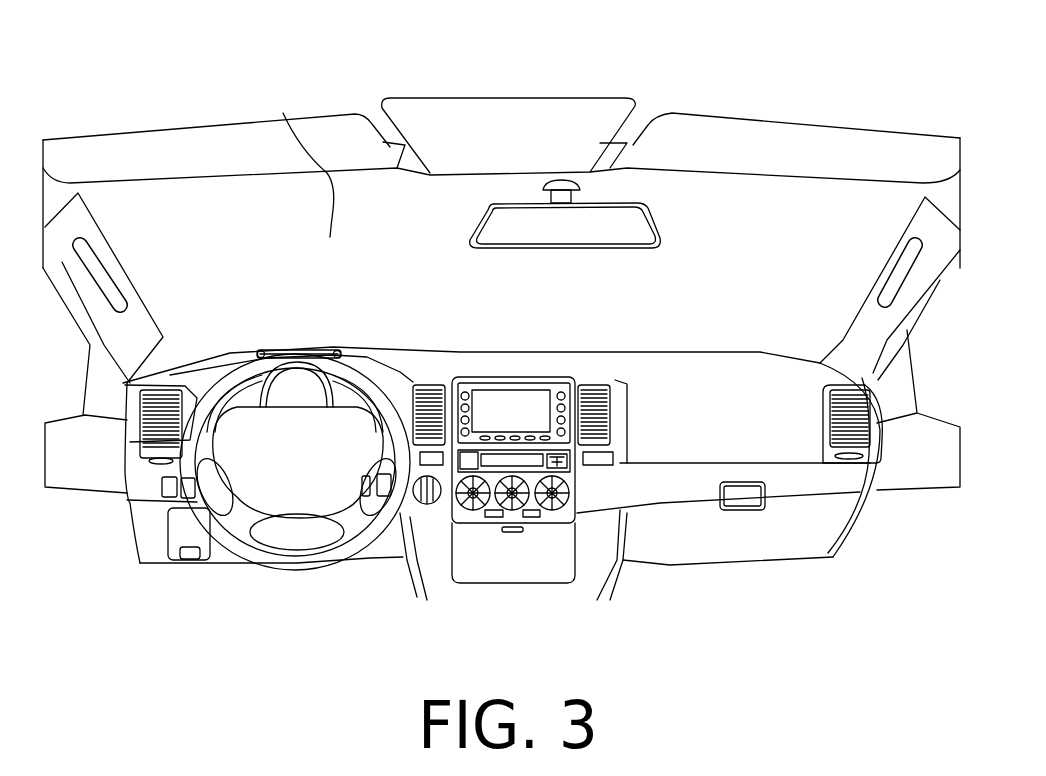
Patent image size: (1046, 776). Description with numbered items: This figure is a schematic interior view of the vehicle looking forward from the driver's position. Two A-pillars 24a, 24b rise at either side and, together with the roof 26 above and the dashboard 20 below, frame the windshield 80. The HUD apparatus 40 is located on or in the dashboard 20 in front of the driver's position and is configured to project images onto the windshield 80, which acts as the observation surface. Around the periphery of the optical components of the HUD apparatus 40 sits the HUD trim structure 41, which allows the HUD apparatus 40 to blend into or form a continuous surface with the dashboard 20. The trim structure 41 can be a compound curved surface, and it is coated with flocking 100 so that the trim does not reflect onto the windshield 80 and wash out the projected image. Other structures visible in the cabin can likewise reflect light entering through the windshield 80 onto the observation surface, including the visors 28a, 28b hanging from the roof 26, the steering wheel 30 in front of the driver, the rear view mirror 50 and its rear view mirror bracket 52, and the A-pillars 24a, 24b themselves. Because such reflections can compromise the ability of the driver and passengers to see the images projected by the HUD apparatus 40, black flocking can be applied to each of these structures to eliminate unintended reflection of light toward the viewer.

The dashboard 20 is at (735, 390).
The A-pillar 24a is at (108, 247).
The A-pillar 24b is at (897, 247).
The roof 26 is at (662, 84).
The visor 28a is at (213, 126).
The visor 28b is at (805, 124).
The steering wheel 30 is at (302, 560).
The HUD apparatus 40 is at (325, 350).
The HUD trim structure 41 is at (260, 350).
The rear view mirror 50 is at (647, 220).
The rear view mirror bracket 52 is at (558, 178).
The windshield 80 is at (283, 113).
The flocking 100 is at (290, 350).